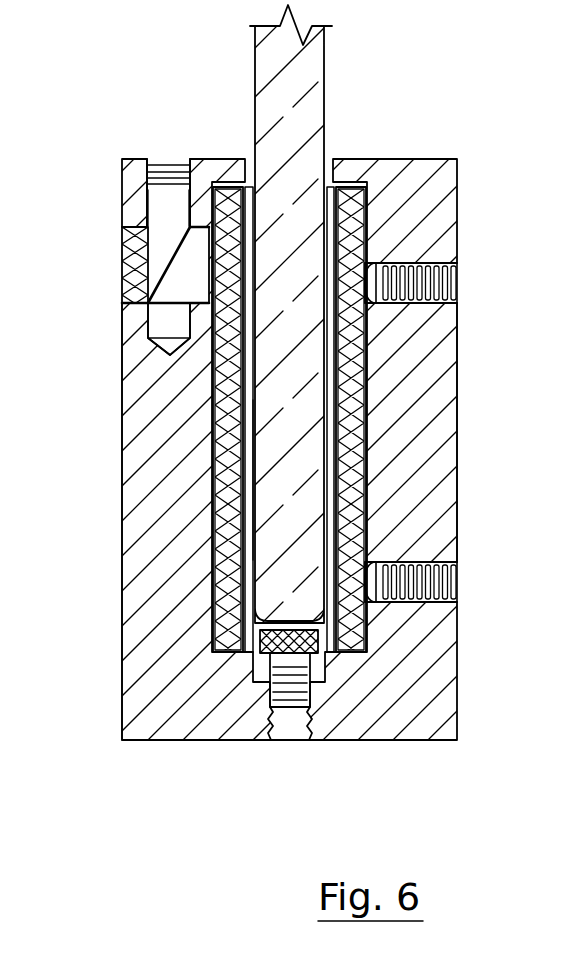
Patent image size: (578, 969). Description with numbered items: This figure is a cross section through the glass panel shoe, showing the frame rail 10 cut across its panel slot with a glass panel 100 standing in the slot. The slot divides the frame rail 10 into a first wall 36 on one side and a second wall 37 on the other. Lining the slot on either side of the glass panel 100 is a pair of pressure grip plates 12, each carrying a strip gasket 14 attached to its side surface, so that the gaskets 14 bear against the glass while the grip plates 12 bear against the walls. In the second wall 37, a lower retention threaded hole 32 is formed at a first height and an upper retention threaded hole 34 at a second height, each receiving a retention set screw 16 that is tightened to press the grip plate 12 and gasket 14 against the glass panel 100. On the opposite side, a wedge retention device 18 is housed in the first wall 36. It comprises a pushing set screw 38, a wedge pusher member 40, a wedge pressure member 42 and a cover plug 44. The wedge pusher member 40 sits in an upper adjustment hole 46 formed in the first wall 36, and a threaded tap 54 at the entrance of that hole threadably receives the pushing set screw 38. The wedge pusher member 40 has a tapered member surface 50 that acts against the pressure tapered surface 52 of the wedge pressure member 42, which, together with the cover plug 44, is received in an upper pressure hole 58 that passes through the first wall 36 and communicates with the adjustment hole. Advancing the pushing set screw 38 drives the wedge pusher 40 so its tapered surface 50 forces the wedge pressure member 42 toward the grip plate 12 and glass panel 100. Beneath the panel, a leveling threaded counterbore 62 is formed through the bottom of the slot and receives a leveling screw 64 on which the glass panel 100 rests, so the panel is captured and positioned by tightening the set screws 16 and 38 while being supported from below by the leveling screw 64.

The frame rail 10 is at (458, 665).
The pressure grip plate 12 is at (248, 560).
The strip gasket 14 is at (232, 498).
The retention set screw 16 is at (458, 282).
The wedge retention device 18 is at (112, 290).
The lower retention threaded hole 32 is at (430, 600).
The upper retention threaded hole 34 is at (425, 262).
The first wall 36 is at (122, 648).
The second wall 37 is at (457, 373).
The pushing set screw 38 is at (180, 160).
The wedge pusher member 40 is at (165, 212).
The wedge pressure member 42 is at (160, 340).
The cover plug 44 is at (160, 258).
The upper adjustment hole 46 is at (160, 205).
The tapered member surface 50 is at (183, 262).
The pressure tapered surface 52 is at (148, 262).
The threaded tap 54 is at (160, 200).
The upper pressure hole 58 is at (252, 478).
The leveling threaded counterbore 62 is at (253, 683).
The leveling screw 64 is at (300, 708).
The glass panel 100 is at (326, 92).